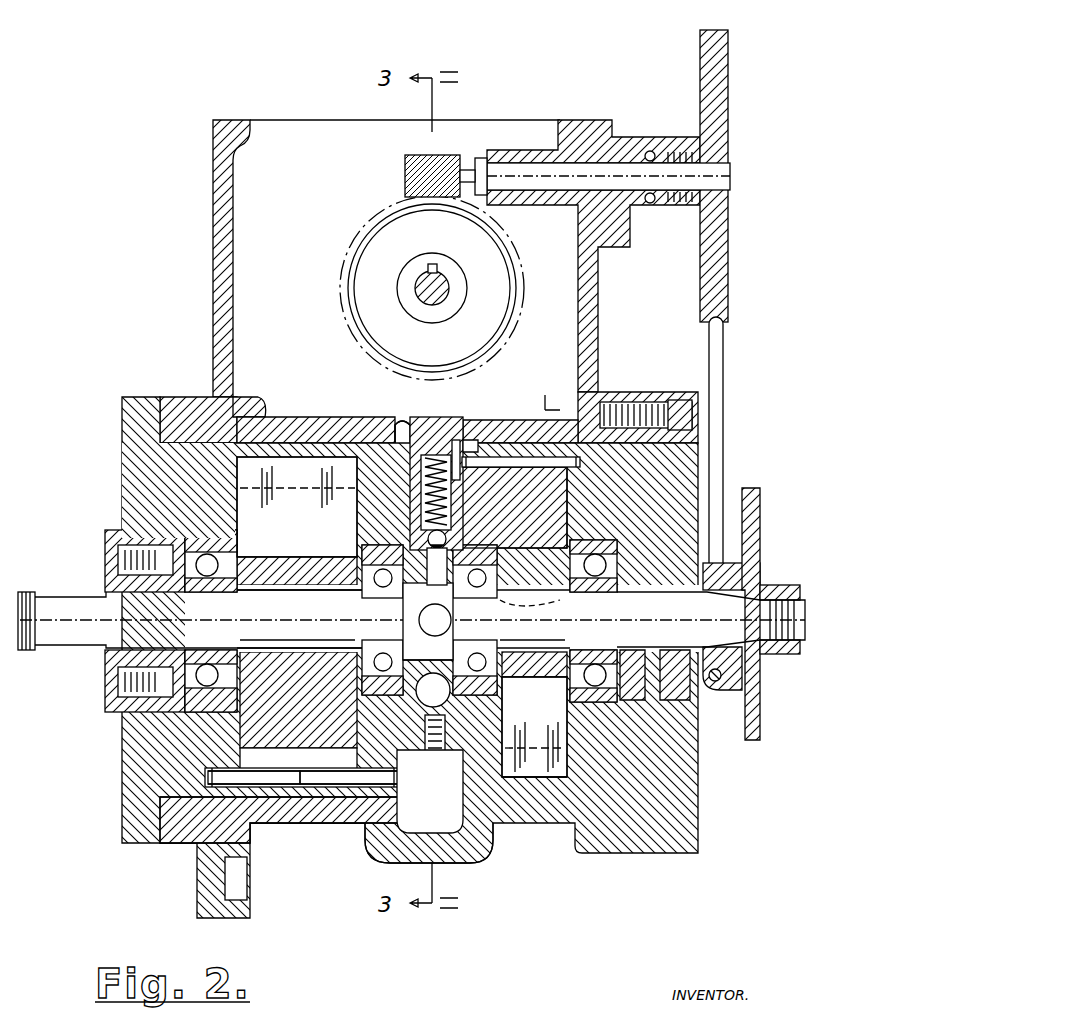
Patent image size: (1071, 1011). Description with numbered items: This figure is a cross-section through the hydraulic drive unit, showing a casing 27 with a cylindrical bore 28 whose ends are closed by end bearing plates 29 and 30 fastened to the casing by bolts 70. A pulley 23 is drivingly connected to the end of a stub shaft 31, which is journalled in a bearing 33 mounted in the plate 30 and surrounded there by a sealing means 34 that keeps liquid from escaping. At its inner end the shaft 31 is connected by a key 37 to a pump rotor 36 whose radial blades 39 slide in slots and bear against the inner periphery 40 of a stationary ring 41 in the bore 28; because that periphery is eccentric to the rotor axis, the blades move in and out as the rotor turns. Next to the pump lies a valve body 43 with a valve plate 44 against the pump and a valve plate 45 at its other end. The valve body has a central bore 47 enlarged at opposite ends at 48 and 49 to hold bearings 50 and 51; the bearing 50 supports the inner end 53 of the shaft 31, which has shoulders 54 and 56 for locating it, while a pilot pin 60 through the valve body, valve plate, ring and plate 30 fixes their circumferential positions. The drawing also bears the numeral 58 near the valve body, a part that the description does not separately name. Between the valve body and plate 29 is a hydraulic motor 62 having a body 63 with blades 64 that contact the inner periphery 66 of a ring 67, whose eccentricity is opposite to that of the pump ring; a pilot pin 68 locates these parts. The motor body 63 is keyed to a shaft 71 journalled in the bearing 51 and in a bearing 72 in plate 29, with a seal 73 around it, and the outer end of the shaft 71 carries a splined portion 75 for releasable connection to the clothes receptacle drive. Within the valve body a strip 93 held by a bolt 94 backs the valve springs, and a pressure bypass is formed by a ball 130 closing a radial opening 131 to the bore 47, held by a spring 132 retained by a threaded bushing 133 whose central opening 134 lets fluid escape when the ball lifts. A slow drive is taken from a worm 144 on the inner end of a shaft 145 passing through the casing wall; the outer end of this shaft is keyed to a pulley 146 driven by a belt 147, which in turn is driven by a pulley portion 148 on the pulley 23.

The pulley 23 is at (760, 728).
The casing 27 is at (300, 824).
The cylindrical bore 28 is at (520, 796).
The end bearing plate 29 is at (130, 796).
The end bearing plate 30 is at (690, 794).
The stub shaft 31 is at (765, 598).
The bearing 33 is at (612, 690).
The sealing means 34 is at (648, 680).
The pump rotor 36 is at (562, 532).
The key 37 is at (665, 593).
The radial blades 39 is at (570, 768).
The inner periphery 40 is at (430, 837).
The stationary ring 41 is at (545, 408).
The valve body 43 is at (458, 776).
The valve plate 44 is at (492, 402).
The valve plate 45 is at (430, 790).
The central bore 47 is at (428, 621).
The enlarged bore end 48 is at (533, 619).
The enlarged bore end 49 is at (382, 620).
The bearing 50 is at (475, 620).
The bearing 51 is at (360, 606).
The inner end of shaft 53 is at (428, 650).
The shoulder 54 is at (532, 632).
The shoulder 56 is at (593, 663).
The housing block 58 is at (566, 512).
The pilot pin 60 is at (517, 454).
The hydraulic motor 62 is at (293, 516).
The motor body 63 is at (245, 718).
The blades 64 is at (238, 476).
The inner periphery 66 is at (276, 788).
The ring 67 is at (328, 788).
The pilot pin 68 is at (345, 788).
The bolts 70 is at (690, 410).
The shaft 71 is at (412, 619).
The bearing 72 is at (178, 700).
The seal 73 is at (130, 660).
The splined portion 75 is at (34, 596).
The strip 93 is at (438, 736).
The bolt 94 is at (424, 727).
The ball 130 is at (458, 564).
The radial opening 131 is at (435, 620).
The spring 132 is at (427, 538).
The threaded bushing 133 is at (455, 445).
The central opening 134 is at (432, 444).
The worm 144 is at (445, 160).
The shaft 145 is at (578, 178).
The pulley 146 is at (726, 100).
The belt 147 is at (723, 338).
The pulley portion 148 is at (735, 566).